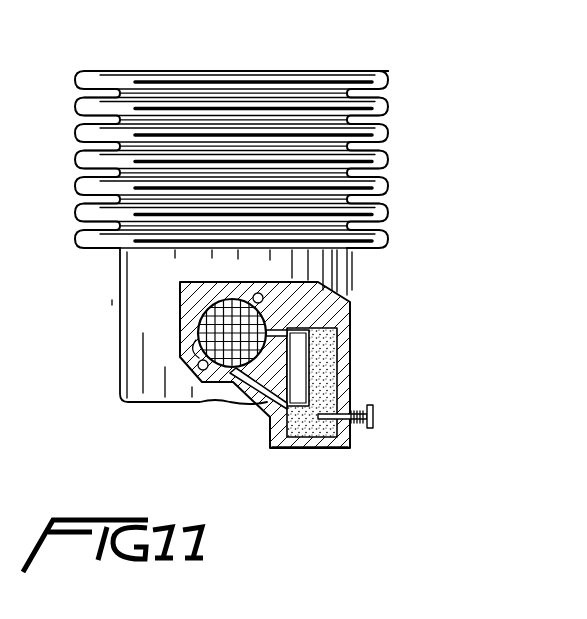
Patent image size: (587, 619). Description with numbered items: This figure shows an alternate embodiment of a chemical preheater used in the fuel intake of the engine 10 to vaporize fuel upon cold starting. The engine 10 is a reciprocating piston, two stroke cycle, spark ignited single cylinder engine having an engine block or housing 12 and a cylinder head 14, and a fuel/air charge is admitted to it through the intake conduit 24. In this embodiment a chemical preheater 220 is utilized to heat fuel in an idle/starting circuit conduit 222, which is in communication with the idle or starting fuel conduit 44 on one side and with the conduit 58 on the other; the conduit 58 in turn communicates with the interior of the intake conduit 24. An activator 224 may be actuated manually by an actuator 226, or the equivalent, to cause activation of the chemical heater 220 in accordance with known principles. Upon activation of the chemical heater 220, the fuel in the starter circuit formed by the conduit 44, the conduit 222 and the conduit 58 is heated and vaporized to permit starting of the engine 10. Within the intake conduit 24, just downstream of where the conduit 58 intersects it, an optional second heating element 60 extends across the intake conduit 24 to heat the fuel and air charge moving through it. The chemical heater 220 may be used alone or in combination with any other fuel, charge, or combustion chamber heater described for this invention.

The engine 10 is at (400, 161).
The engine block 12 is at (347, 267).
The cylinder head 14 is at (385, 70).
The intake conduit 24 is at (180, 340).
The idle or starting fuel conduit 44 is at (262, 408).
The conduit 58 is at (352, 312).
The second heating element 60 is at (190, 349).
The chemical preheater 220 is at (326, 385).
The idle/starting circuit conduit 222 is at (311, 358).
The activator 224 is at (326, 449).
The actuator 226 is at (374, 414).